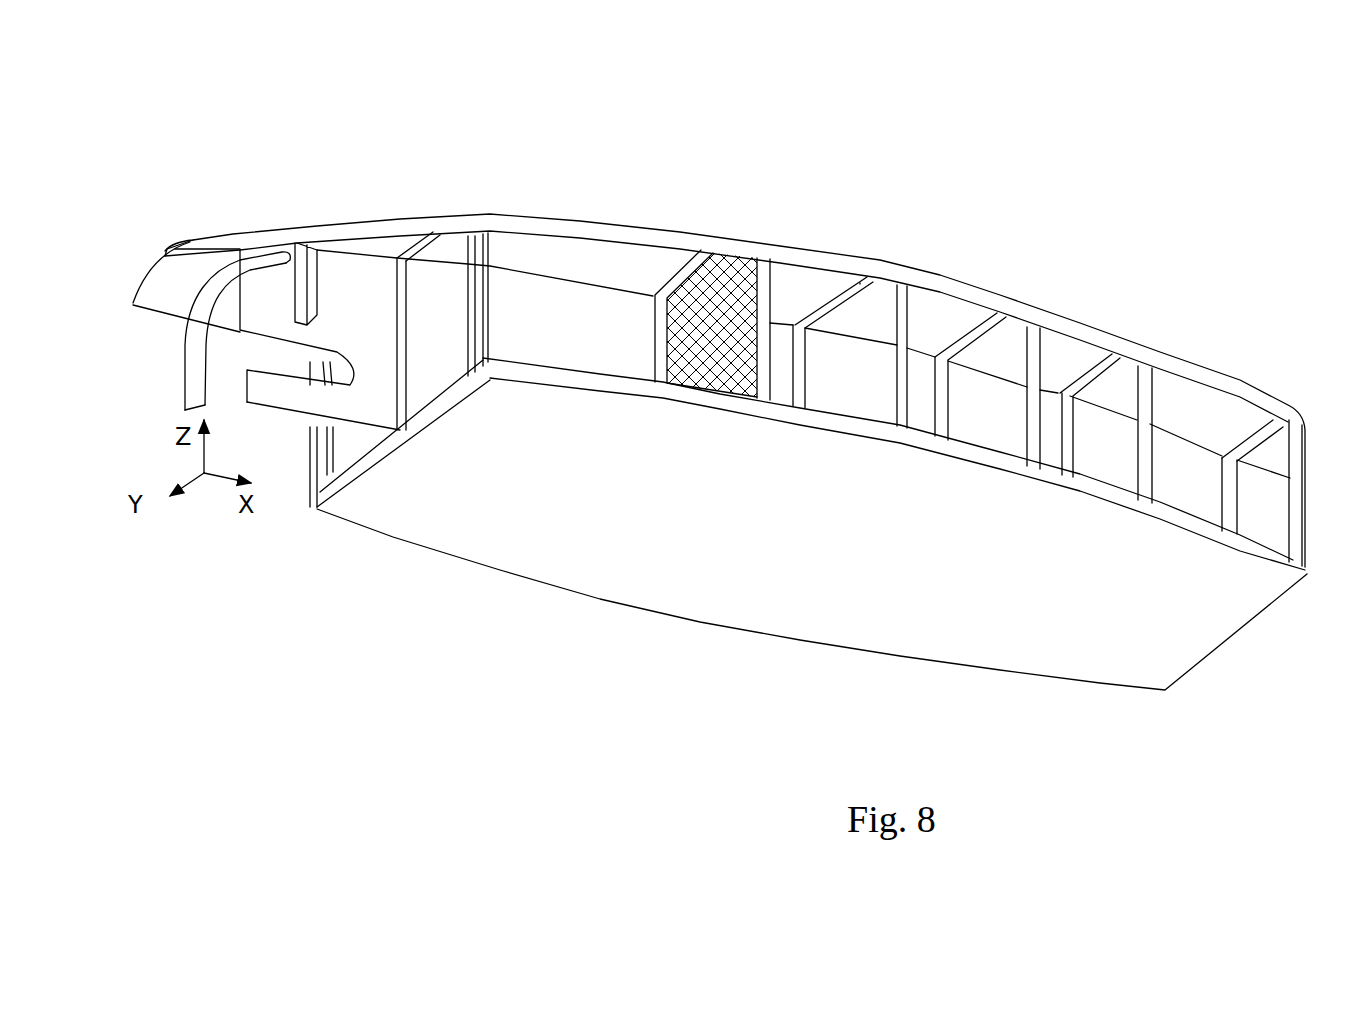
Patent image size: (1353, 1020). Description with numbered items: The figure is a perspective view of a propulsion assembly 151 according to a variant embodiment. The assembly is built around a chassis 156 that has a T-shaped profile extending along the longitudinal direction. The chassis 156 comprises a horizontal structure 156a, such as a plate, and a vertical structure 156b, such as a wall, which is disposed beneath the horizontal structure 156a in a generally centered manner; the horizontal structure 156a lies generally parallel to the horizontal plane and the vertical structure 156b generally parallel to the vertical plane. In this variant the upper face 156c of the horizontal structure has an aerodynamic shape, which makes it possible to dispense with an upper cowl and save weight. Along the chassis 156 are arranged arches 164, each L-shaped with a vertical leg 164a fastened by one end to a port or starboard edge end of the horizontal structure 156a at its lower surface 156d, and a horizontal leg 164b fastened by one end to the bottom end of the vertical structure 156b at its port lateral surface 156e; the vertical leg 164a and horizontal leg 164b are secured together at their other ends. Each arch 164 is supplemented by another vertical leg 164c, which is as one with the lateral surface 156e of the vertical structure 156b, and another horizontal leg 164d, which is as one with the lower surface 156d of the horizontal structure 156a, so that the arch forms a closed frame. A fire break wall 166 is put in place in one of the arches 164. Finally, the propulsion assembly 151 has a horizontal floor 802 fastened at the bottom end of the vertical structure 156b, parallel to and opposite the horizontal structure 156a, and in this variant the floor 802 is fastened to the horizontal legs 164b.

The propulsion assembly 151 is at (220, 170).
The chassis 156 is at (1183, 281).
The horizontal structure 156a is at (1250, 400).
The vertical structure 156b is at (347, 402).
The upper face 156c is at (693, 292).
The lower surface 156d is at (1077, 353).
The port lateral surface 156e is at (843, 375).
The arch 164 is at (712, 265).
The vertical leg 164a is at (486, 245).
The horizontal leg 164b is at (430, 403).
The other vertical leg 164c is at (393, 292).
The other horizontal leg 164d is at (403, 252).
The fire break wall 166 is at (725, 335).
The floor 802 is at (823, 539).